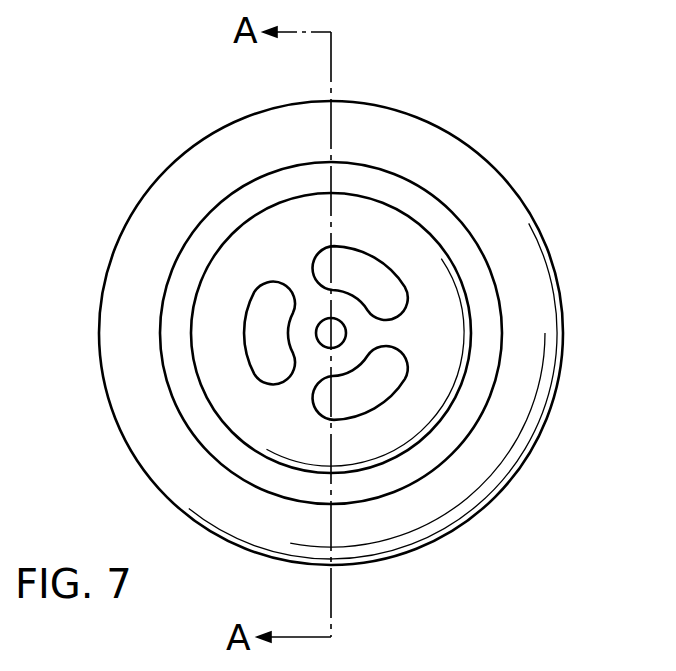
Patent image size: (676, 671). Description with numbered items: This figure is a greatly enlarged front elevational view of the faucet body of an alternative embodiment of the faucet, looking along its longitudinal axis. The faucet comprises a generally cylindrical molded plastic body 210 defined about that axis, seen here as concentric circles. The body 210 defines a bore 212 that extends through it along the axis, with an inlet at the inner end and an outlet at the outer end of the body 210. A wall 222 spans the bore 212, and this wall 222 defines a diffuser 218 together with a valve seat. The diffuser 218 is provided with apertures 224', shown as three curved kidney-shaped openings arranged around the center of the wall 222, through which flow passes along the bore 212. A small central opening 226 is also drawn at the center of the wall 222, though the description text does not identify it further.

The body 210 is at (477, 237).
The bore 212 is at (208, 397).
The diffuser 218 is at (445, 341).
The wall 222 is at (302, 248).
The apertures 224' is at (294, 268).
The central aperture 226 is at (325, 327).